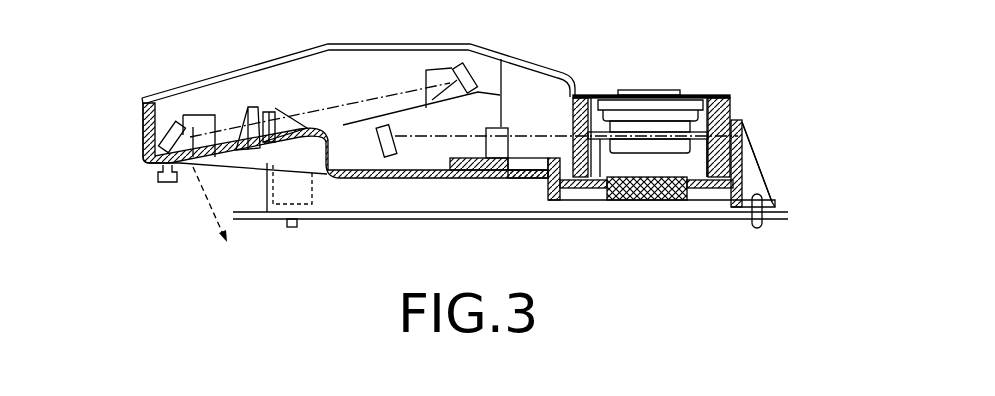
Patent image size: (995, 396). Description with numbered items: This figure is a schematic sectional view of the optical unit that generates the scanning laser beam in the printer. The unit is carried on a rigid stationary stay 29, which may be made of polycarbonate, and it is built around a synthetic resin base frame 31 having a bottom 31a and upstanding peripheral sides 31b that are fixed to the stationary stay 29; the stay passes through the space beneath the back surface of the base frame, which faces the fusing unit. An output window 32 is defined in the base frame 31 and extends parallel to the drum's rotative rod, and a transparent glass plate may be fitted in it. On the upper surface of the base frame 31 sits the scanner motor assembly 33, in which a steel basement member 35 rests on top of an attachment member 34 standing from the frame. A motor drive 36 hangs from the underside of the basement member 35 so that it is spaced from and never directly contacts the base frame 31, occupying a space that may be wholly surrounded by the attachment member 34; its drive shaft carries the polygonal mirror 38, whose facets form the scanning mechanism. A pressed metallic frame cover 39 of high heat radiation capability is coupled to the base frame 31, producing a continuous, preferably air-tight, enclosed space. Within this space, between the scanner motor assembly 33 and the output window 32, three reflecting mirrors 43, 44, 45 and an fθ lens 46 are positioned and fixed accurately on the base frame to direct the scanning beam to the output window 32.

The stationary stay 29 is at (413, 220).
The base frame 31 is at (337, 173).
The bottom 31a is at (540, 177).
The upstanding peripheral sides 31b is at (145, 128).
The output window 32 is at (190, 165).
The scanner motor assembly 33 is at (692, 135).
The attachment member 34 is at (730, 113).
The basement member 35 is at (717, 93).
The motor drive 36 is at (632, 90).
The polygonal mirror 38 is at (598, 143).
The frame cover 39 is at (560, 67).
The reflecting mirror 43 is at (393, 162).
The reflecting mirror 44 is at (459, 66).
The reflecting mirror 45 is at (177, 122).
The fθ lens 46 is at (508, 145).